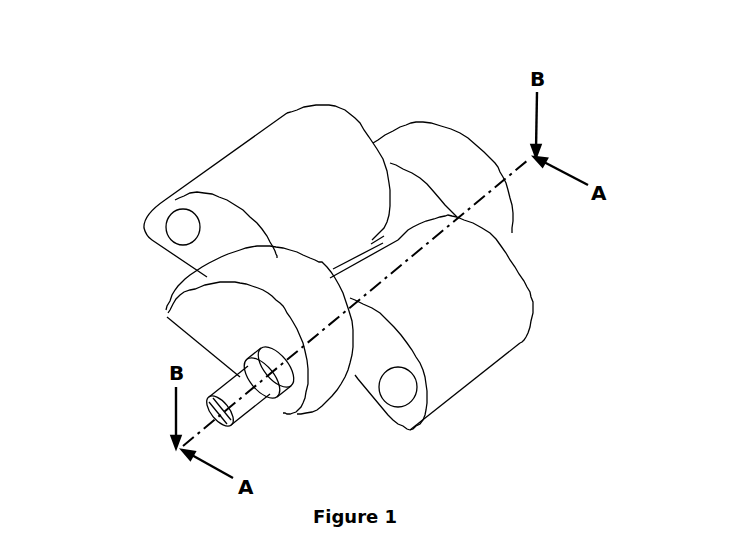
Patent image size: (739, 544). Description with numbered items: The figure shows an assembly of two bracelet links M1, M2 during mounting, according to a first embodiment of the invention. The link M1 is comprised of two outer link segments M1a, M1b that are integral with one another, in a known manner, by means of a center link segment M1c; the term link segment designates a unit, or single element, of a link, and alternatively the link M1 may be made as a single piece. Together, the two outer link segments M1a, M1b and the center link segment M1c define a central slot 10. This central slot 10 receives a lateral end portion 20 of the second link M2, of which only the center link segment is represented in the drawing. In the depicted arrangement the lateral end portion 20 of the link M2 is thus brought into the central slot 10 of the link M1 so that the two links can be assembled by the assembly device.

The bracelet link M1 is at (266, 93).
The outer link segment M1a is at (442, 142).
The outer link segment M1b is at (193, 323).
The center link segment M1c is at (225, 175).
The bracelet link M2 is at (512, 370).
The central slot 10 is at (370, 246).
The lateral end portion 20 is at (380, 262).